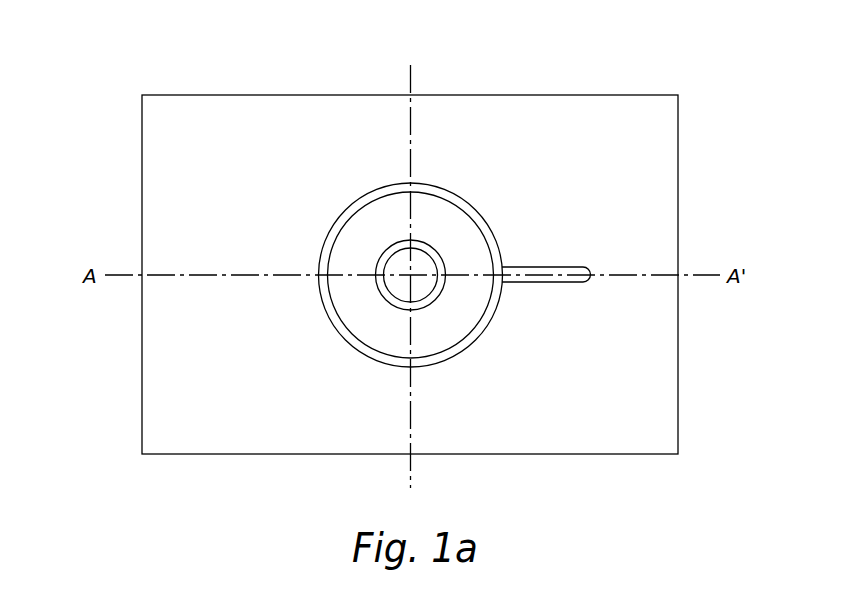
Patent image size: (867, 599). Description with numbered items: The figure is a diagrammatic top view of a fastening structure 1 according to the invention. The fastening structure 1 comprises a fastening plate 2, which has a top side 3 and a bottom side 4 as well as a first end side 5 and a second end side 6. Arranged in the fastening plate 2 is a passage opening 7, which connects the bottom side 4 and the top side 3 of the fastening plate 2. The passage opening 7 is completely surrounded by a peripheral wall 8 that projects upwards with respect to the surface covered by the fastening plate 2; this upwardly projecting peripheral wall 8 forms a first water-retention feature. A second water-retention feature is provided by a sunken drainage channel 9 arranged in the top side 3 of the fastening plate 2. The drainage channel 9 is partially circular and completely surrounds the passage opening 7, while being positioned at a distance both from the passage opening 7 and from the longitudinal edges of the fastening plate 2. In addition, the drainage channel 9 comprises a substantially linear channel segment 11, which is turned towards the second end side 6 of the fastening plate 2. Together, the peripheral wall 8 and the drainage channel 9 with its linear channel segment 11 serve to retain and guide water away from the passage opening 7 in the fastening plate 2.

The fastening structure 1 is at (712, 70).
The fastening plate 2 is at (200, 87).
The top side 3 is at (288, 140).
The bottom side 4 is at (132, 179).
The first end side 5 is at (133, 362).
The second end side 6 is at (687, 362).
The passage opening 7 is at (400, 265).
The peripheral wall 8 is at (385, 300).
The drainage channel 9 is at (480, 327).
The linear channel segment 11 is at (550, 268).